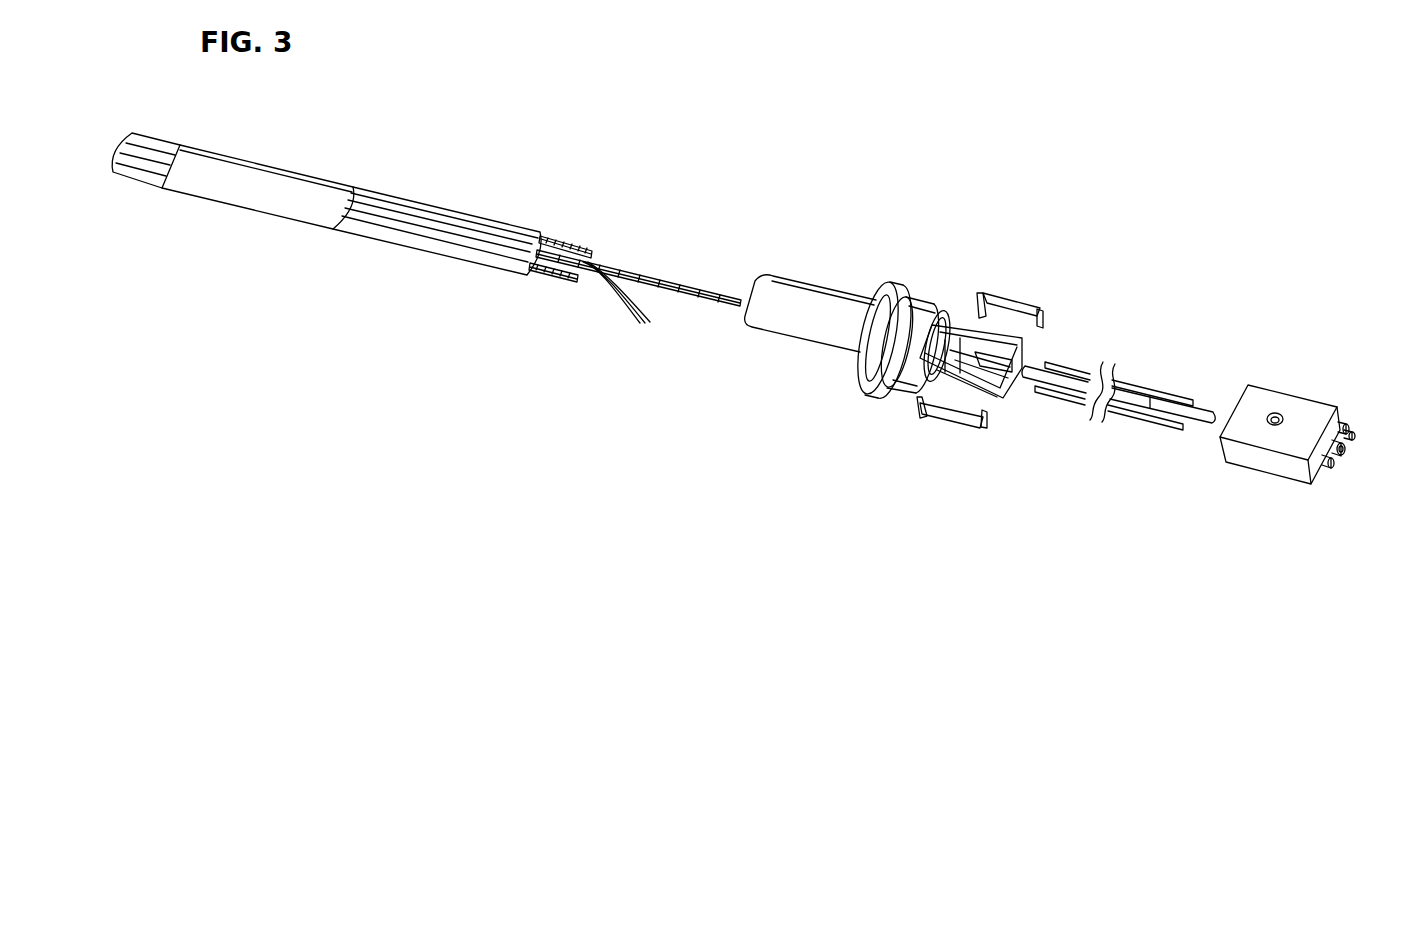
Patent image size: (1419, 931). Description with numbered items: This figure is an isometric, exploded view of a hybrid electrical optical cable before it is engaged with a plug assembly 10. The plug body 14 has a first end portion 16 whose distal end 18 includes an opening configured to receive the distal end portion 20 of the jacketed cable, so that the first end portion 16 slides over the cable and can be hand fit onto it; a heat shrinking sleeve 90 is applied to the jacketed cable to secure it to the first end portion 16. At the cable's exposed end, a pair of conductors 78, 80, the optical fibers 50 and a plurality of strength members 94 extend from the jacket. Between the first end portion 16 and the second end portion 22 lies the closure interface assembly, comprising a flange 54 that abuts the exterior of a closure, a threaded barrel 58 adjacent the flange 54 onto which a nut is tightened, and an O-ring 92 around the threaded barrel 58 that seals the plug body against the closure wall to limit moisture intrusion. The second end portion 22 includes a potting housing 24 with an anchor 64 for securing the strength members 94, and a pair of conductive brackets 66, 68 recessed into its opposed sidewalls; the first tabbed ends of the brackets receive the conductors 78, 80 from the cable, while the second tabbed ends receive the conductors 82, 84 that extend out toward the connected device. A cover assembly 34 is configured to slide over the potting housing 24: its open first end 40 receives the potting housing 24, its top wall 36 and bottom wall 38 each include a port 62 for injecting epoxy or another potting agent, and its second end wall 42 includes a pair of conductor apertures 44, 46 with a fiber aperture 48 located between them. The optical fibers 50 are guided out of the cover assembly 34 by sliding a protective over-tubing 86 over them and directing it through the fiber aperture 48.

The plug assembly 10 is at (908, 265).
The plug body 14 is at (808, 310).
The first end portion 16 is at (770, 352).
The distal end 18 is at (740, 284).
The distal end portion 20 is at (470, 212).
The second end portion 22 is at (863, 407).
The potting housing 24 is at (1017, 394).
The cover assembly 34 is at (1292, 426).
The top wall 36 is at (1252, 410).
The bottom wall 38 is at (1287, 483).
The open first end 40 is at (1210, 446).
The second end wall 42 is at (1340, 420).
The conductor aperture 44 is at (1331, 470).
The conductor aperture 46 is at (1352, 436).
The fiber aperture 48 is at (1342, 456).
The optical fibers 50 is at (663, 288).
The flange 54 is at (842, 439).
The threaded barrel 58 is at (953, 297).
The port 62 is at (1268, 425).
The anchor 64 is at (1012, 350).
The conductive bracket 66 is at (962, 427).
The conductive bracket 68 is at (1037, 300).
The conductor 78 is at (572, 285).
The conductor 80 is at (590, 250).
The conductor 82 is at (1047, 395).
The conductor 84 is at (1060, 363).
The protective over-tubing 86 is at (1205, 406).
The heat shrinking sleeve 90 is at (275, 163).
The O-ring 92 is at (933, 300).
The strength members 94 is at (622, 312).